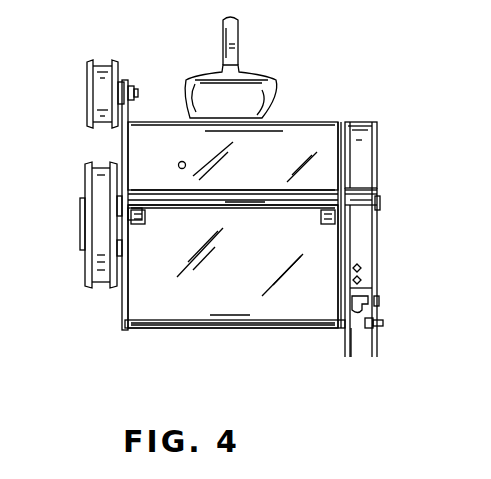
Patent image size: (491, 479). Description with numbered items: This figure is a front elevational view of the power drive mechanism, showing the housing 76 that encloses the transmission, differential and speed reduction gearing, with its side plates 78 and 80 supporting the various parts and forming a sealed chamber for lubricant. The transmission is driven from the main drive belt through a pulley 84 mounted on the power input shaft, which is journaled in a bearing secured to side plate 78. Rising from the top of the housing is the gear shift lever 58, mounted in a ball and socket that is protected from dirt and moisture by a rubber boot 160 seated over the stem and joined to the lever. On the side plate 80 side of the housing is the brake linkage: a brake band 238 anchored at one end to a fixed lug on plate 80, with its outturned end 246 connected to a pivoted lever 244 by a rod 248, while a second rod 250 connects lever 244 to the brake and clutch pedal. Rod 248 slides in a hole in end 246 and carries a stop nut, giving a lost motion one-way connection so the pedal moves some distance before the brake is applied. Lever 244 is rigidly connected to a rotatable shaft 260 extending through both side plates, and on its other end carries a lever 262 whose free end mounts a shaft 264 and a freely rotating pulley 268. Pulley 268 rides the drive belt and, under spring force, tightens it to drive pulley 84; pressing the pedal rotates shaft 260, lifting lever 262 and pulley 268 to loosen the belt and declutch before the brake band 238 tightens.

The gear shift lever 58 is at (238, 30).
The housing 76 is at (207, 314).
The side plate 78 is at (125, 302).
The side plate 80 is at (338, 294).
The pulley 84 is at (88, 267).
The rubber boot 160 is at (270, 90).
The brake band 238 is at (367, 150).
The pivoted lever 244 is at (373, 255).
The outturned end 246 is at (350, 322).
The rod 248 is at (372, 303).
The rod 250 is at (384, 322).
The rotatable shaft 260 is at (257, 207).
The lever 262 is at (124, 145).
The shaft 264 is at (137, 90).
The pulley 268 is at (97, 80).